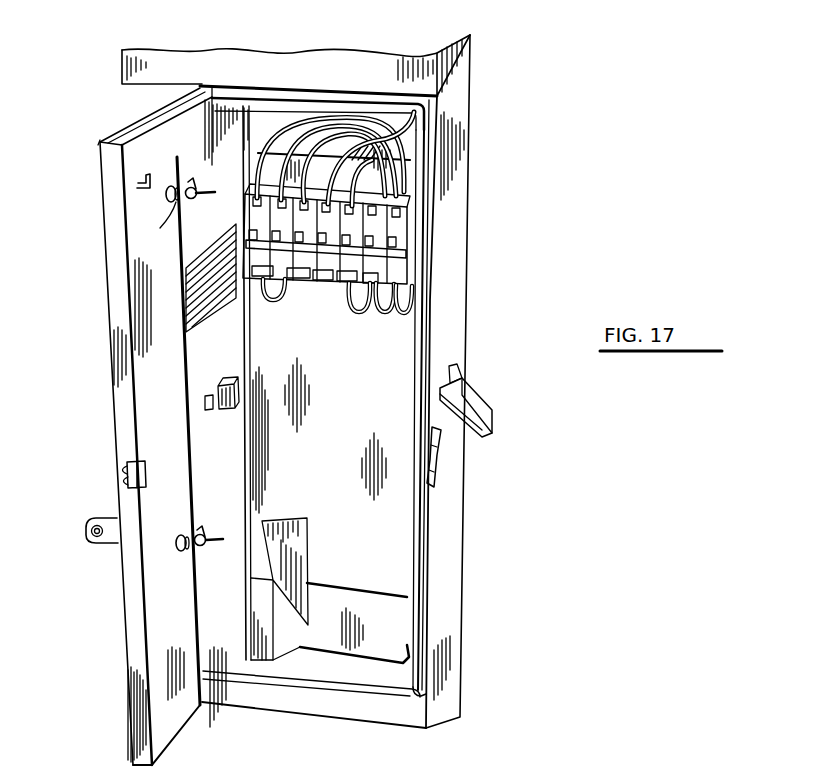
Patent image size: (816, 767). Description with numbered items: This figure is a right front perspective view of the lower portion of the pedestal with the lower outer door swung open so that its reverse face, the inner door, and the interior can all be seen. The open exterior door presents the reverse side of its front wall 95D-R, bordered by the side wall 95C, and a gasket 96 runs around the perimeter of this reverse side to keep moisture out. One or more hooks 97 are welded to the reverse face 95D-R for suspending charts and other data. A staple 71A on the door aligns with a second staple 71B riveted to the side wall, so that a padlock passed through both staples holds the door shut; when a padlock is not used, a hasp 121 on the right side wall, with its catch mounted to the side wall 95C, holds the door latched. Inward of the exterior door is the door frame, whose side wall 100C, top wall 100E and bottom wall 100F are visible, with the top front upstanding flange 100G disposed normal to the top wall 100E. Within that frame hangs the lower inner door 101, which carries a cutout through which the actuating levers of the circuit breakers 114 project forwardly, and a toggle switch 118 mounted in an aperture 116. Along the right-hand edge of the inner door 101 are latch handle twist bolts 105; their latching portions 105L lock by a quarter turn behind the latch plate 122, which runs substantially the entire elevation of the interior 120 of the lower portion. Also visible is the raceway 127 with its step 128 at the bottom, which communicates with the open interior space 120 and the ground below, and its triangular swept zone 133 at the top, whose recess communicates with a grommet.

The triangular swept zone 133 is at (243, 120).
The top front upstanding flange 100G is at (328, 107).
The top wall 100E is at (423, 107).
The gasket 96 is at (195, 122).
The reverse side of front wall 95D-R is at (143, 150).
The hook 97 is at (177, 158).
The latch handle twist bolt 105 is at (170, 196).
The latching portion 105L is at (193, 200).
The side wall 95C is at (118, 297).
The circuit breaker 114 is at (375, 228).
The latch plate 122 is at (415, 341).
The aperture 116 is at (216, 393).
The toggle switch 118 is at (206, 403).
The hasp 121 is at (125, 478).
The second staple 71B is at (433, 463).
The staple 71A is at (107, 543).
The interior 120 is at (363, 518).
The side wall 100C is at (417, 622).
The lower inner door 101 is at (213, 617).
The raceway 127 is at (263, 527).
The step 128 is at (289, 640).
The bottom wall 100F is at (375, 687).